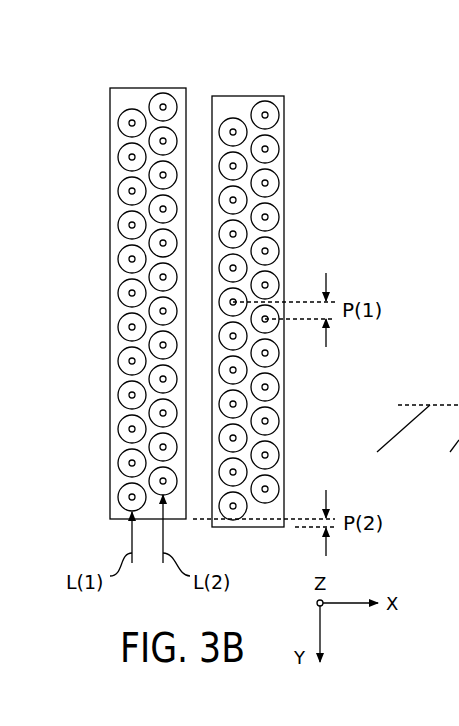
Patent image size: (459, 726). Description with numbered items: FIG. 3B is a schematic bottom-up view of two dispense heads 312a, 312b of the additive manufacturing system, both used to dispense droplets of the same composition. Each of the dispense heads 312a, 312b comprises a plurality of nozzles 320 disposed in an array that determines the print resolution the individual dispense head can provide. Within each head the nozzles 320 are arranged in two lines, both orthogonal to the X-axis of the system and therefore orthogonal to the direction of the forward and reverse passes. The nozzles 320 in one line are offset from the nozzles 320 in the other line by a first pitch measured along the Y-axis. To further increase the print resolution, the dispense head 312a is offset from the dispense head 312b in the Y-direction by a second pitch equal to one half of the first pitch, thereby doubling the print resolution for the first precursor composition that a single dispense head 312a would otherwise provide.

The dispense head 312a is at (137, 88).
The dispense head 312b is at (243, 96).
The nozzle 320 is at (131, 327).